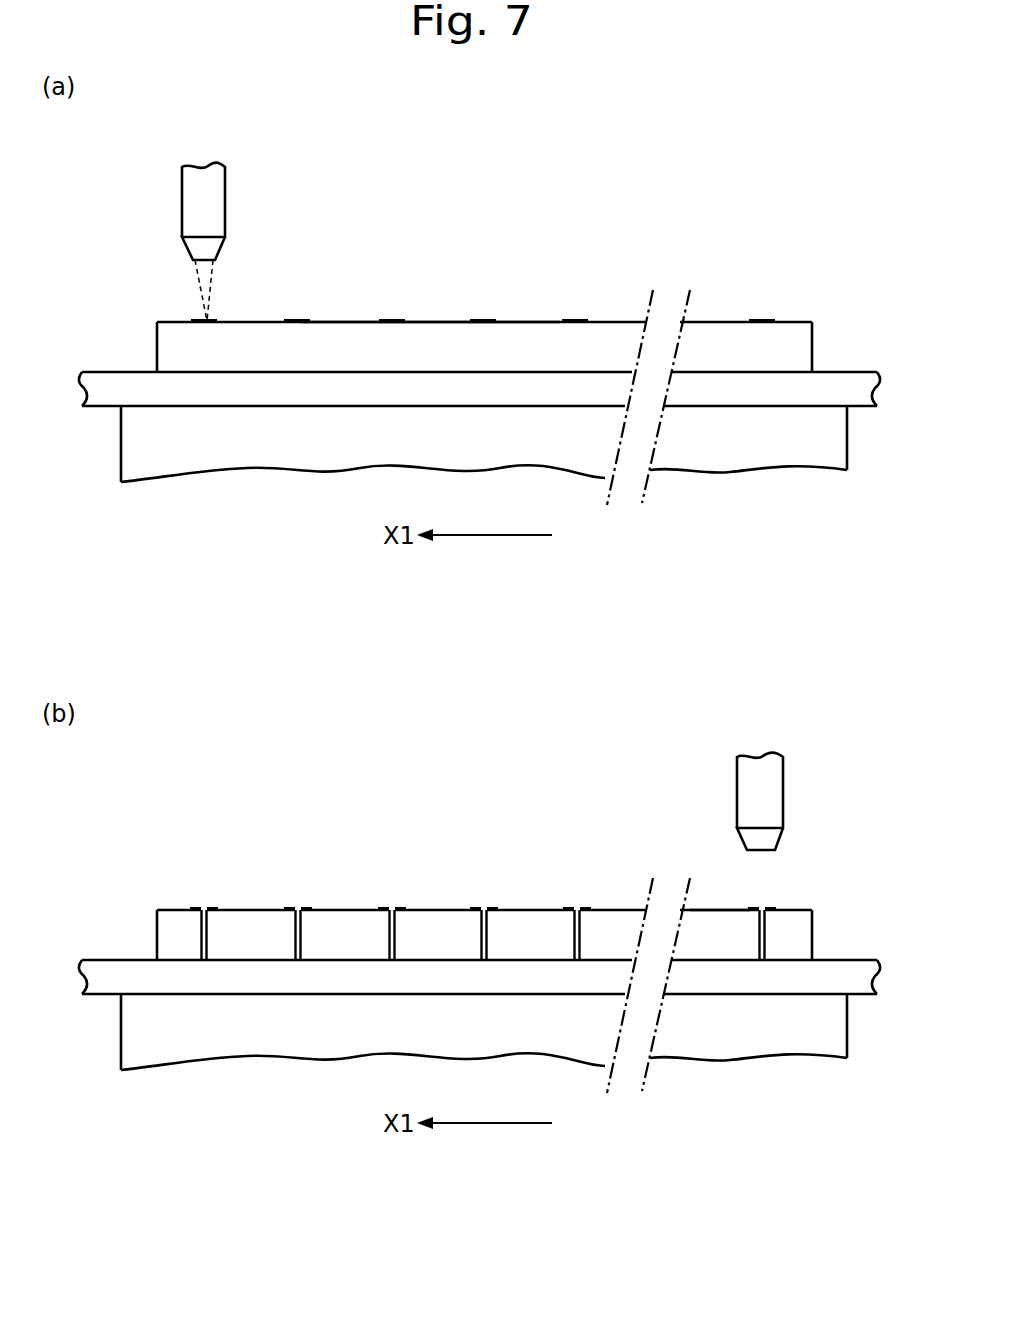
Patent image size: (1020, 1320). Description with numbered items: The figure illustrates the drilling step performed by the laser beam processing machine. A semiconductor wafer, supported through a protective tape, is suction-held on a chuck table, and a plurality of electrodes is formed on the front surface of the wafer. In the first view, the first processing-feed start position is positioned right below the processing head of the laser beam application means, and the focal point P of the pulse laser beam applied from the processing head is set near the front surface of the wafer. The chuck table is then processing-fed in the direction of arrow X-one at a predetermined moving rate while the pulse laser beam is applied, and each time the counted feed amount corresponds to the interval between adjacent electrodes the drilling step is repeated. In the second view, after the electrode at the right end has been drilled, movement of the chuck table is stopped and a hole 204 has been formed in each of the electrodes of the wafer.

The focal point P is at (200, 320).
The hole 204 is at (198, 908).